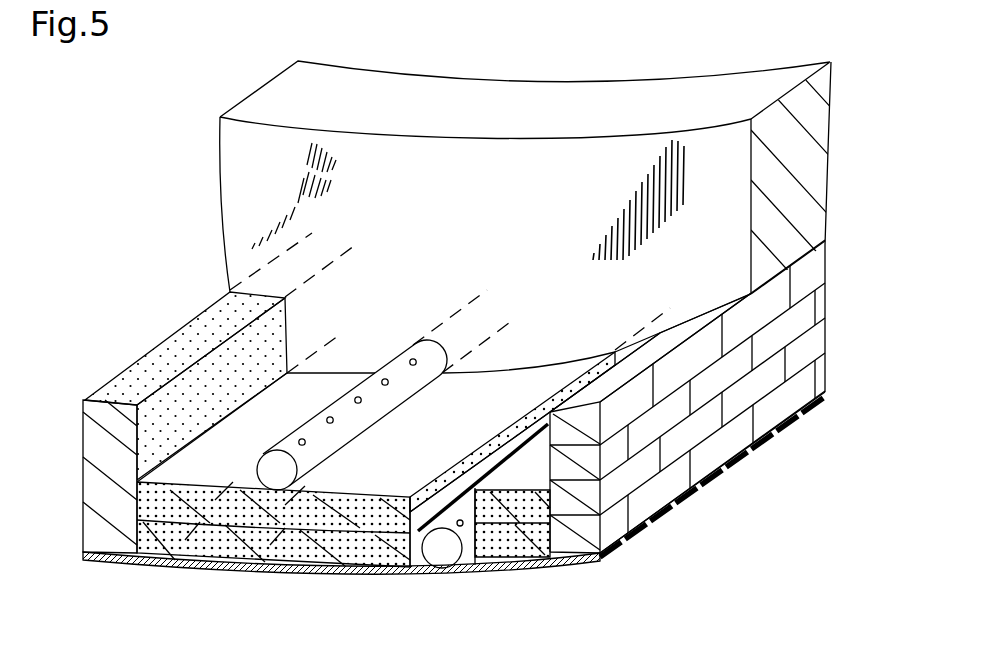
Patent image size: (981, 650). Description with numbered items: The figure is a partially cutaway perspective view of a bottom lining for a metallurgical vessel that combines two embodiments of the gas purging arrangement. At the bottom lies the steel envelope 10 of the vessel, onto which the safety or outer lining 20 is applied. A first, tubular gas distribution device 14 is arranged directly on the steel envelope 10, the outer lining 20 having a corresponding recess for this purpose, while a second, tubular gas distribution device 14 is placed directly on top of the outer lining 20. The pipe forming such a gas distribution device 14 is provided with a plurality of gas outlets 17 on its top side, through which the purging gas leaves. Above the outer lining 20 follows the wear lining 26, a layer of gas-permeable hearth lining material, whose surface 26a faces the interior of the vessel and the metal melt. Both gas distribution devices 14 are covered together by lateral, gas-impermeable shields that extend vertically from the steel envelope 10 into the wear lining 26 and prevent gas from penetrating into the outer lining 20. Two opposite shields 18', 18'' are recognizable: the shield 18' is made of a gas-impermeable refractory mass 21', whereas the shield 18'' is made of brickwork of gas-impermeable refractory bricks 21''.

The wear lining 26 is at (252, 198).
The surface of wear lining 26a is at (383, 87).
The shield 18' is at (162, 386).
The shield 18'' is at (580, 397).
The gas-impermeable refractory mass 21' is at (78, 476).
The gas-impermeable refractory bricks 21'' is at (687, 398).
The gas outlets 17 is at (384, 379).
The gas distribution device 14 is at (322, 455).
The outer lining 20 is at (268, 568).
The steel envelope 10 is at (364, 578).